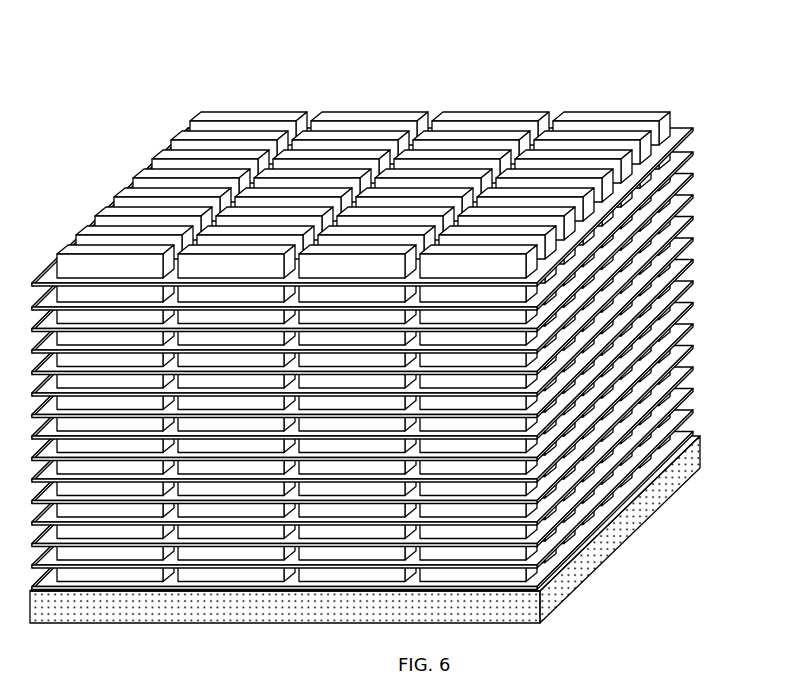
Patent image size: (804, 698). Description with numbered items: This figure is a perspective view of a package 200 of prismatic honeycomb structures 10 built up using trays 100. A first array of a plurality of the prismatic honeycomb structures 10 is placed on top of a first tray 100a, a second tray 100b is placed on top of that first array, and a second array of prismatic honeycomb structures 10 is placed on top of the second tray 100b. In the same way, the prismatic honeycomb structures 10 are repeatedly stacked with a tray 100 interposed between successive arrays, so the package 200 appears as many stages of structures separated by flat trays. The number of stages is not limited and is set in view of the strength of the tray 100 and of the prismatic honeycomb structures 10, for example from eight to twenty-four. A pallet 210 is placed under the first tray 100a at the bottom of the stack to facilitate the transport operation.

The prismatic honeycomb structure 10 is at (604, 110).
The tray 100 is at (700, 236).
The first tray 100a is at (700, 430).
The second tray 100b is at (700, 408).
The package 200 is at (151, 100).
The pallet 210 is at (656, 501).